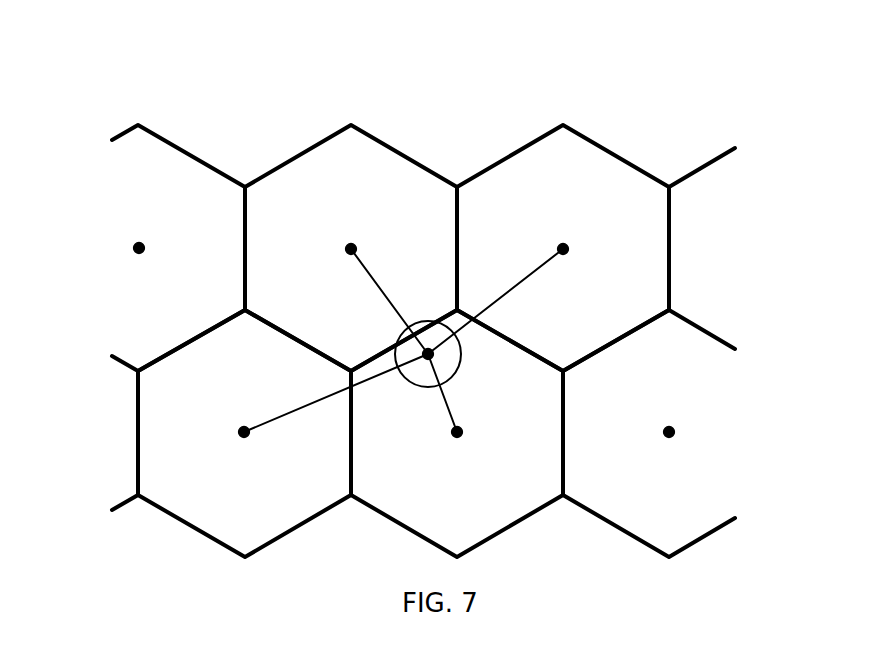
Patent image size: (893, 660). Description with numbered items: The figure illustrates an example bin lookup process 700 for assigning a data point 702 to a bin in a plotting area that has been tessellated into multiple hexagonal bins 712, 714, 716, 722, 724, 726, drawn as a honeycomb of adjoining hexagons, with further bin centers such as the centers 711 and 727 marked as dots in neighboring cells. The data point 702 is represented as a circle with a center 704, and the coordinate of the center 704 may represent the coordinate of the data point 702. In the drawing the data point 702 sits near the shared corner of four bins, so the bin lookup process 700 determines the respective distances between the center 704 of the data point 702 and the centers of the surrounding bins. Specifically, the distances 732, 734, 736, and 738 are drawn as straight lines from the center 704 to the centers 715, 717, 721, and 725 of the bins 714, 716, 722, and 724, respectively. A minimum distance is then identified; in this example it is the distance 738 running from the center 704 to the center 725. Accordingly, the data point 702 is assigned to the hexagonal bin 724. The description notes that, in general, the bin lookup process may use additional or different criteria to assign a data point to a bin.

The bin lookup process 700 is at (522, 99).
The data point 702 is at (462, 355).
The center 704 is at (428, 350).
The cell center point 711 is at (130, 246).
The hexagonal bin 712 is at (150, 133).
The hexagonal bin 714 is at (300, 155).
The center 715 is at (343, 246).
The hexagonal bin 716 is at (614, 154).
The center 717 is at (572, 251).
The center 721 is at (234, 430).
The bin 722 is at (192, 527).
The hexagonal bin 724 is at (402, 527).
The center 725 is at (466, 434).
The hexagonal bin 726 is at (702, 539).
The cell center point 727 is at (678, 434).
The distance 732 is at (382, 290).
The distance 734 is at (514, 286).
The distance 736 is at (302, 412).
The distance 738 is at (448, 398).